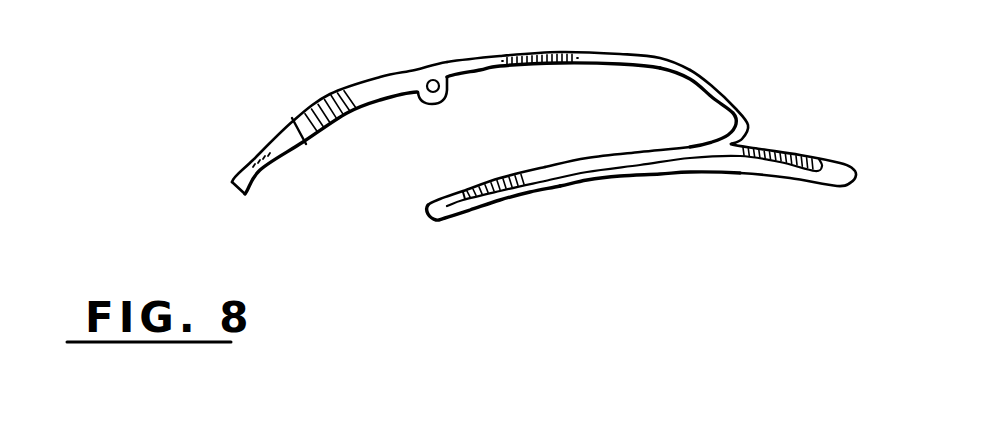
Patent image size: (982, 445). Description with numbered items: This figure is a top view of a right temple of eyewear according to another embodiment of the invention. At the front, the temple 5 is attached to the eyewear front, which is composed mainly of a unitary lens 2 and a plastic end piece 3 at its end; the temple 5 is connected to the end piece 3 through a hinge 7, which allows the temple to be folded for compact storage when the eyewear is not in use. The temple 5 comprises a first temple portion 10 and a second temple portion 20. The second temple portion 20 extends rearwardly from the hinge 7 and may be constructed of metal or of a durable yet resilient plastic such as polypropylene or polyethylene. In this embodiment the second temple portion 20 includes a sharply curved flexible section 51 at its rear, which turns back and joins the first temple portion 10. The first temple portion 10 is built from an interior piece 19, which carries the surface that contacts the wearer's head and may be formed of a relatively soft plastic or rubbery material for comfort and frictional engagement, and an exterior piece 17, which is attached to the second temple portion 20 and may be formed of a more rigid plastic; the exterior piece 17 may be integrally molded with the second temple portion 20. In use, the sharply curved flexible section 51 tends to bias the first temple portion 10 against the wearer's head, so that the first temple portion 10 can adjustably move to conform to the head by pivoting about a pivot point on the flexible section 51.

The unitary lens 2 is at (262, 169).
The end piece 3 is at (380, 76).
The temple 5 is at (687, 54).
The hinge 7 is at (433, 80).
The first temple portion 10 is at (497, 202).
The exterior piece 17 is at (532, 174).
The interior piece 19 is at (659, 177).
The second temple portion 20 is at (585, 54).
The sharply curved flexible section 51 is at (744, 110).